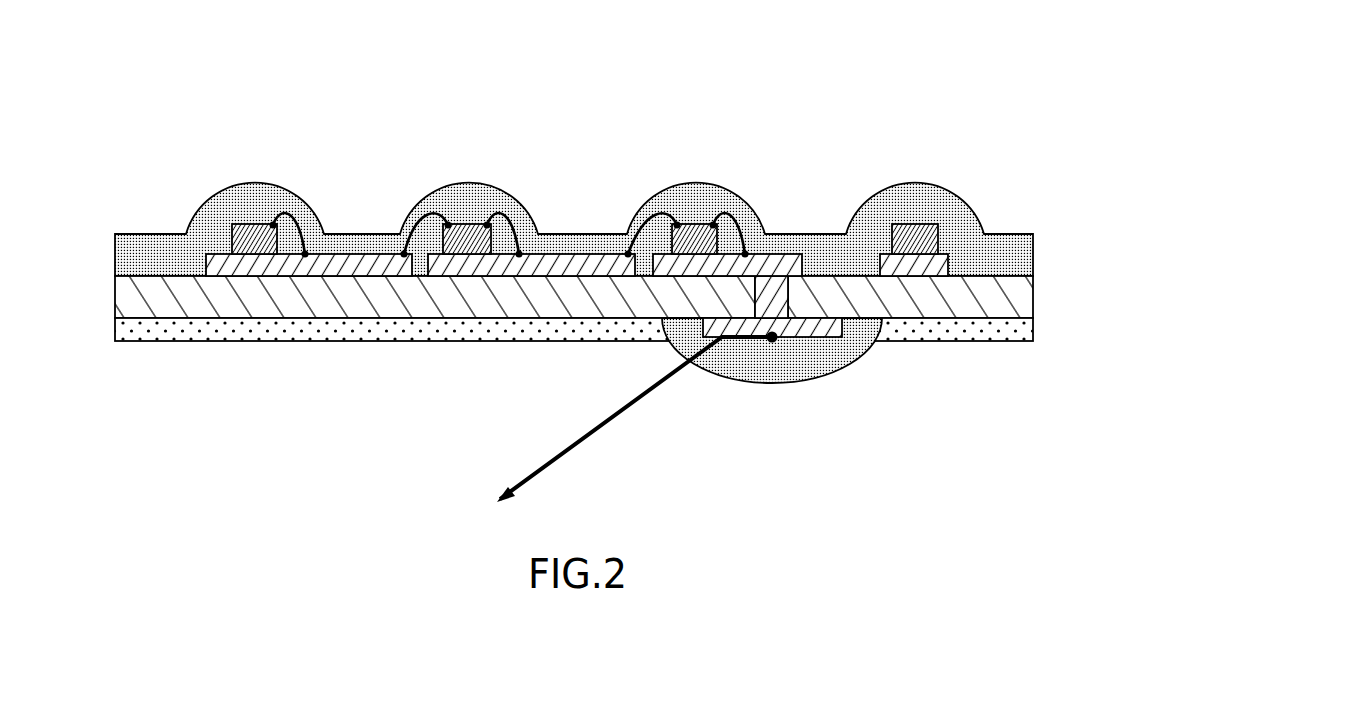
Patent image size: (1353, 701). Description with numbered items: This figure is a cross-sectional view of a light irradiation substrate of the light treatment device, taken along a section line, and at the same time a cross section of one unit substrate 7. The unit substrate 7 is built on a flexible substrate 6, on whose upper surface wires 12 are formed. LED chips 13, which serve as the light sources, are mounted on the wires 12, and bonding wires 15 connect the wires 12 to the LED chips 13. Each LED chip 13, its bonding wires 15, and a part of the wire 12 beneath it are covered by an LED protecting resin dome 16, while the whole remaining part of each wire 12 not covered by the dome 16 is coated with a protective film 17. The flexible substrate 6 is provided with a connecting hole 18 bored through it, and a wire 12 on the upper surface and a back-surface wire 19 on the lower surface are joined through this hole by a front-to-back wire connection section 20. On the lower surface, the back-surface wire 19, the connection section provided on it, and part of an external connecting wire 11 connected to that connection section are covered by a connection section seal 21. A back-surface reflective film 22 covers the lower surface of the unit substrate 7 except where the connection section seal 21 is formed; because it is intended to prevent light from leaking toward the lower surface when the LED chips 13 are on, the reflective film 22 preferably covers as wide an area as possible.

The unit substrate 7 is at (701, 275).
The LED protecting resin dome 16 is at (252, 198).
The LED chip 13 is at (243, 235).
The bonding wire 15 is at (497, 213).
The front-to-back wire connection section 20 is at (968, 294).
The protective film 17 is at (1033, 255).
The flexible substrate 6 is at (1033, 297).
The back-surface reflective film 22 is at (1033, 325).
The wire 12 is at (317, 268).
The connecting hole 18 is at (785, 327).
The back-surface wire 19 is at (783, 320).
The connection section seal 21 is at (773, 384).
The external connecting wire 11 is at (553, 467).